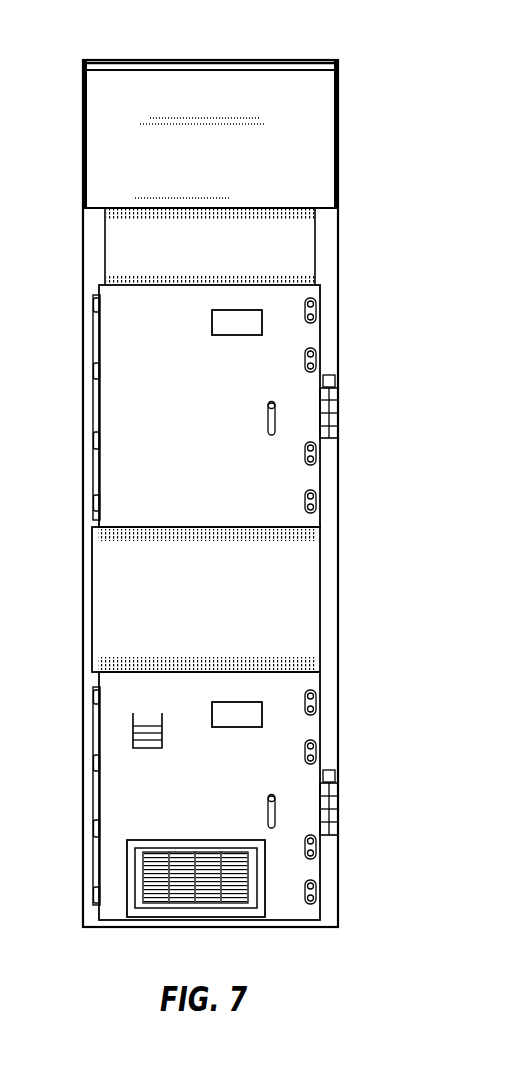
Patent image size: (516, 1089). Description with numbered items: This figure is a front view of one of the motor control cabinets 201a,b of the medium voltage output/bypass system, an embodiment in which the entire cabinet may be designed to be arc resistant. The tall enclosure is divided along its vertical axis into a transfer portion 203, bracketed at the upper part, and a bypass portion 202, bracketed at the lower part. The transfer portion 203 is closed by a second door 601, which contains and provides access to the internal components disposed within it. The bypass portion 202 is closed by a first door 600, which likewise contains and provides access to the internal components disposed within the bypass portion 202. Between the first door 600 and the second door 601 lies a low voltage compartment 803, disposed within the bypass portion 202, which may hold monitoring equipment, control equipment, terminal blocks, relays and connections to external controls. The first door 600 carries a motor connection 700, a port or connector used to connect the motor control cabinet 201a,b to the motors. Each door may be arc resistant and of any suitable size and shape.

The motor control cabinet 201a,b is at (349, 58).
The transfer portion 203 is at (80, 283).
The bypass portion 202 is at (80, 927).
The second door 601 is at (231, 420).
The low voltage compartment 803 is at (233, 614).
The first door 600 is at (219, 828).
The motor connection 700 is at (160, 738).